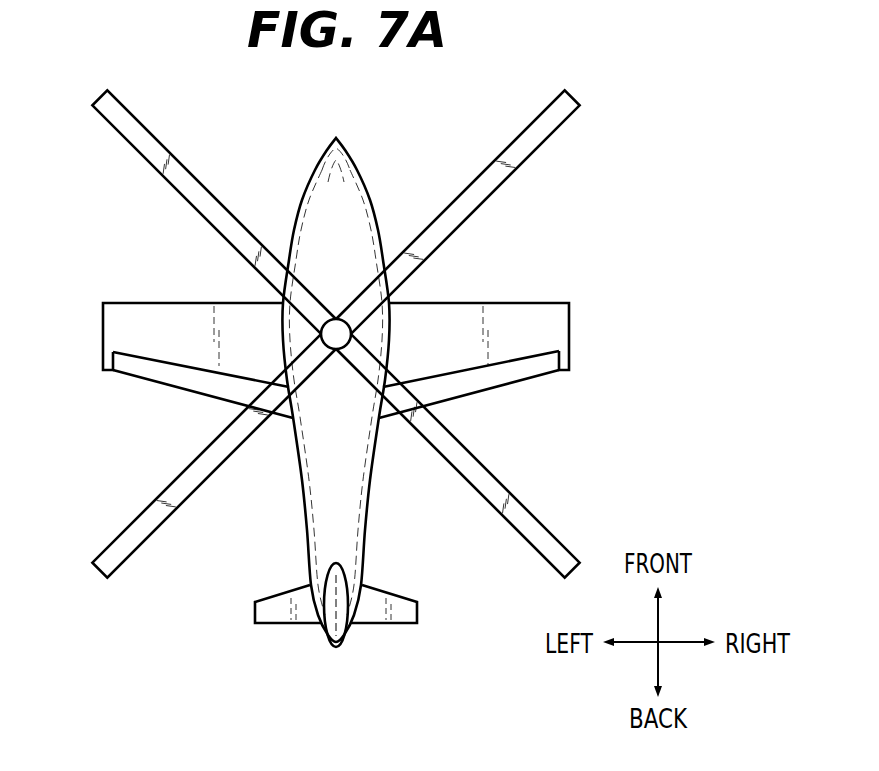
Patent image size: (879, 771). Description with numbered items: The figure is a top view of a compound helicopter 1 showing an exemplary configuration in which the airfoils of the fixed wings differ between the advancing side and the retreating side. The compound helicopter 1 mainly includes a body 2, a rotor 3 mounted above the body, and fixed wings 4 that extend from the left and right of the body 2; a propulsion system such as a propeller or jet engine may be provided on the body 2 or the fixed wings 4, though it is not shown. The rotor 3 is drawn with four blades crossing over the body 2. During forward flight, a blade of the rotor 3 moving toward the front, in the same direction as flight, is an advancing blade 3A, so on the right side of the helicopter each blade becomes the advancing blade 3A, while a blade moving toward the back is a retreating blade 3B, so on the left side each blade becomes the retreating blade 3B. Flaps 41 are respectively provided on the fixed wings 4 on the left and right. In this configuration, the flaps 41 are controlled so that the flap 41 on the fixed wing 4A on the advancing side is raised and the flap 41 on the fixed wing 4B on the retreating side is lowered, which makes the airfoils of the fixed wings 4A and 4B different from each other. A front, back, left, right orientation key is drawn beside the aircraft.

The compound helicopter 1 is at (370, 138).
The body 2 is at (313, 517).
The rotor 3 is at (542, 538).
The advancing blade 3A is at (545, 137).
The retreating blade 3B is at (158, 142).
The fixed wings 4 is at (110, 327).
The fixed wing on the advancing side 4A is at (512, 310).
The fixed wing on the retreating side 4B is at (180, 312).
The flap 41 is at (168, 380).